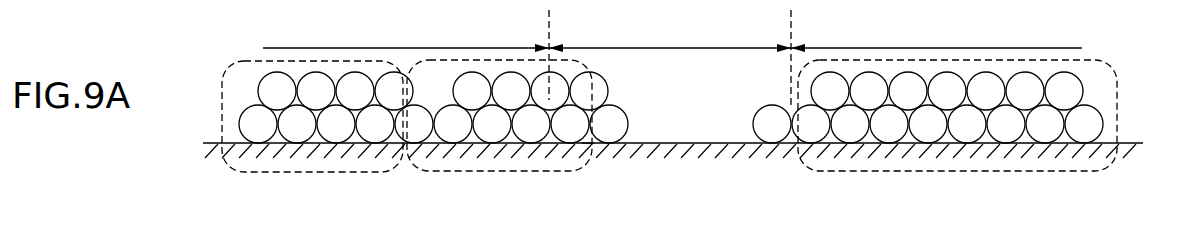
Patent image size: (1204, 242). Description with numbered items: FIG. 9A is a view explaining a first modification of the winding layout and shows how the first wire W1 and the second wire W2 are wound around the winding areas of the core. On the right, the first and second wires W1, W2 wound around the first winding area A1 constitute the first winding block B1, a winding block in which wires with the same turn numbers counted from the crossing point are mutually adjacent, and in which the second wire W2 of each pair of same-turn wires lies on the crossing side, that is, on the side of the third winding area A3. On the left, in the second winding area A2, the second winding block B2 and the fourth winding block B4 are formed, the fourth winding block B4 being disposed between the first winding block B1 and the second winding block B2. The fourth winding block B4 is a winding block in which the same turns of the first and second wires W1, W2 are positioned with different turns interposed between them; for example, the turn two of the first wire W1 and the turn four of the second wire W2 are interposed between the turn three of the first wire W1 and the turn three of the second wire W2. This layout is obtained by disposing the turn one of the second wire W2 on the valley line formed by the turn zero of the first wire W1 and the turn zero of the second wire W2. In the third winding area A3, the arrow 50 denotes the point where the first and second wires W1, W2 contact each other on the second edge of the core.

The first wire W1 is at (248, 108).
The second wire W2 is at (259, 78).
The first winding block B1 is at (1117, 90).
The second winding block B2 is at (222, 117).
The fourth winding block B4 is at (497, 171).
The arrow 50 is at (588, 144).
The first winding area A1 is at (936, 33).
The second winding area A2 is at (406, 33).
The third winding area A3 is at (670, 33).